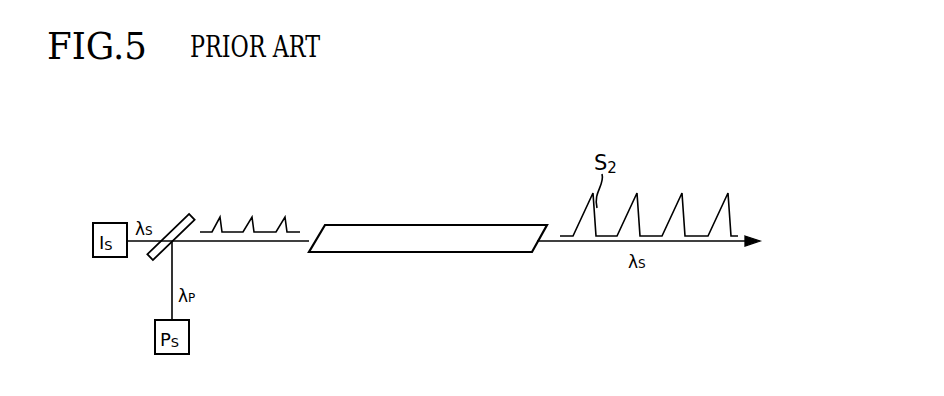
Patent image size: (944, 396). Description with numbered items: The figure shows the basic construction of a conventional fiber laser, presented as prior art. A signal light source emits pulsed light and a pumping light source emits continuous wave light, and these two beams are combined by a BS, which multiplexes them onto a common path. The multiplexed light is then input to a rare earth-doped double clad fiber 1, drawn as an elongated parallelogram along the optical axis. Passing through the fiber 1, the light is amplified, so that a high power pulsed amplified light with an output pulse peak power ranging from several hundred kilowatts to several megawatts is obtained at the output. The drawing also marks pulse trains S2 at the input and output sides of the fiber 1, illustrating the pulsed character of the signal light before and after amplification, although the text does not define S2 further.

The rare earth-doped double clad fiber 1 is at (440, 245).
The element BS is at (171, 218).
The signal pulses S2 is at (228, 215).